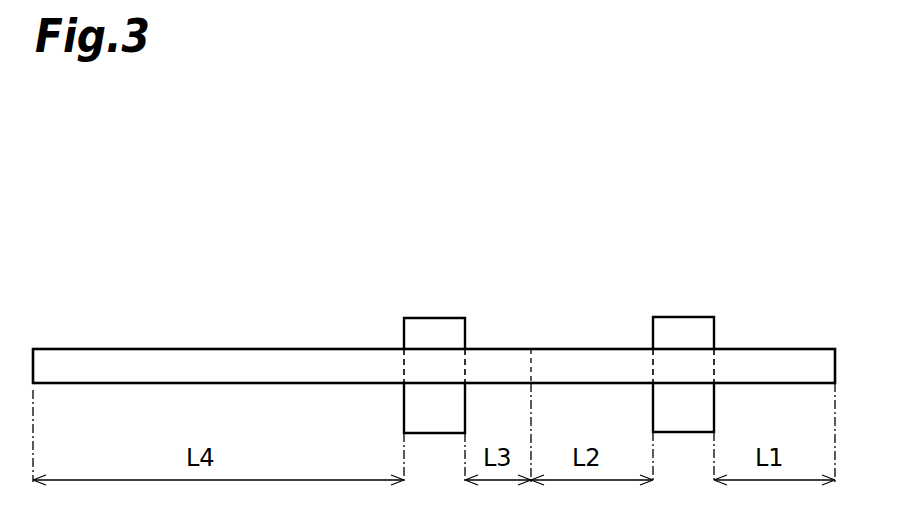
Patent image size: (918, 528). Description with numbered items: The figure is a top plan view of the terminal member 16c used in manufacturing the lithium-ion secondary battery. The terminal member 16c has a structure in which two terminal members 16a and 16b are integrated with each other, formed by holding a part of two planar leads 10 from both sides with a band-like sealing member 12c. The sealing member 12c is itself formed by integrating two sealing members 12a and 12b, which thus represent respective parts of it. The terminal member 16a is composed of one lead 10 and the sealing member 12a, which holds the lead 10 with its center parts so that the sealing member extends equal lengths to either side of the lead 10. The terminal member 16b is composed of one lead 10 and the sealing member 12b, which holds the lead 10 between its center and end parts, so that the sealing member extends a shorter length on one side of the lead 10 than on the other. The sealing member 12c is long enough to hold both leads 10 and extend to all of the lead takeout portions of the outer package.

The planar lead 10 is at (432, 331).
The sealing member 12a is at (609, 361).
The sealing member 12b is at (356, 361).
The sealing member 12c is at (150, 361).
The terminal member 16a is at (707, 263).
The terminal member 16b is at (457, 263).
The terminal member 16c is at (677, 221).